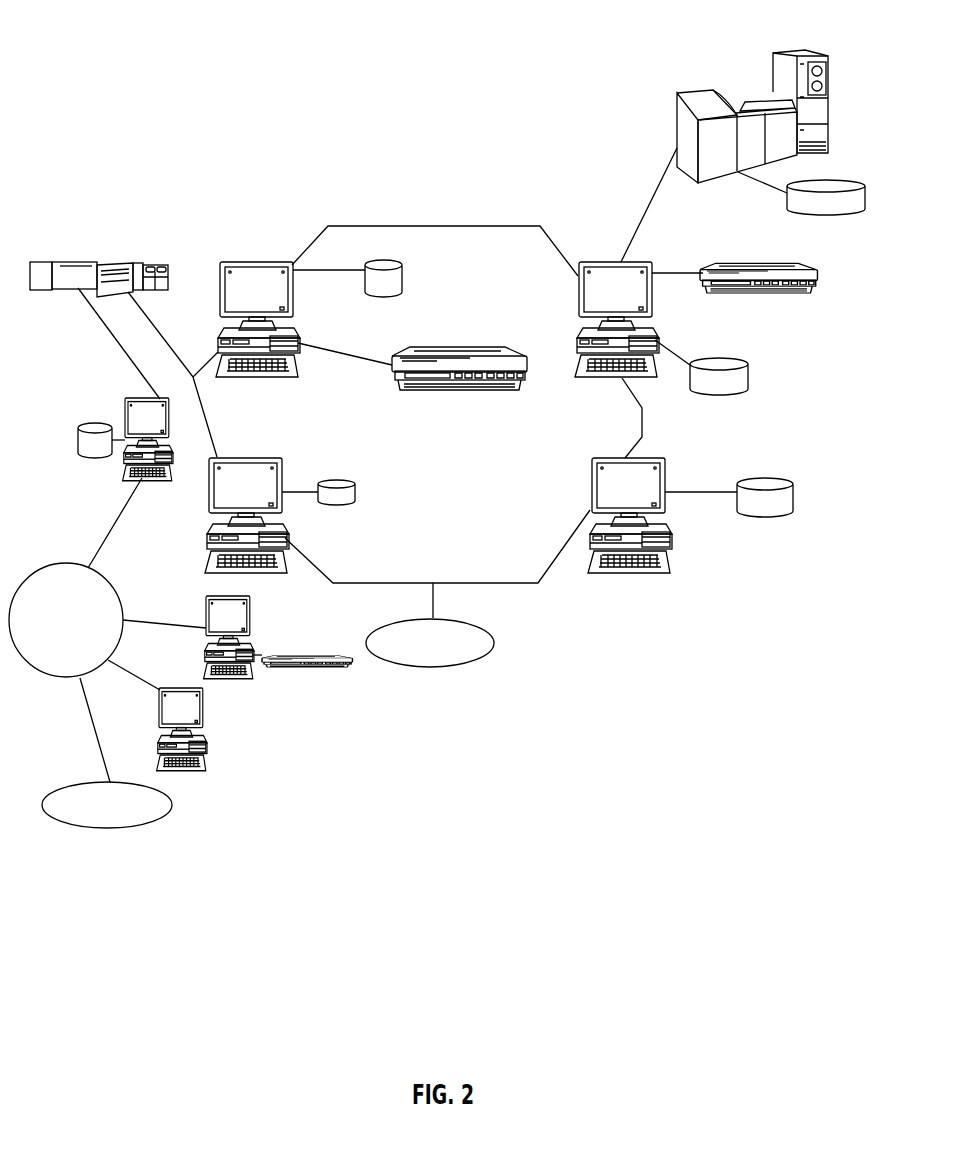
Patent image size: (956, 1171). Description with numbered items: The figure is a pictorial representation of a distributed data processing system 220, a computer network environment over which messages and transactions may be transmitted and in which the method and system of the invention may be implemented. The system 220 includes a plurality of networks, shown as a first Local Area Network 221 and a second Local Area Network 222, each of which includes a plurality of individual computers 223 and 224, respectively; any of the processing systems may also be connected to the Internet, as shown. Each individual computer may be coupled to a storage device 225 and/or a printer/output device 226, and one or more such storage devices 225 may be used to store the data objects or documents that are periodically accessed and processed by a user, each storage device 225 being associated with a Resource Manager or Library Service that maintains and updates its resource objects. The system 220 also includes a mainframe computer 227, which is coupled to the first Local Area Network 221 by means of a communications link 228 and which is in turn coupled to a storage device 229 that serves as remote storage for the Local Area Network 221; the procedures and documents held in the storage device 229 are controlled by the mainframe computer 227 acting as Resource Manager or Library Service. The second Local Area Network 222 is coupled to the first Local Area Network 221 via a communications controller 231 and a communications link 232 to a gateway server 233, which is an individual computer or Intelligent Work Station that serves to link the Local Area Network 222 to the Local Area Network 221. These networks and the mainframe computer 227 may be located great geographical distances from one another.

The distributed data processing system 220 is at (449, 217).
The Local Area Network 221 is at (538, 583).
The Local Area Network 222 is at (75, 565).
The individual computer 223 is at (222, 262).
The individual computer 224 is at (248, 606).
The storage device 225 is at (403, 280).
The printer/output device 226 is at (458, 353).
The mainframe computer 227 is at (715, 92).
The communications link 228 is at (158, 330).
The storage device 229 is at (817, 180).
The communications controller 231 is at (165, 268).
The communications link 232 is at (113, 337).
The gateway server 233 is at (127, 400).